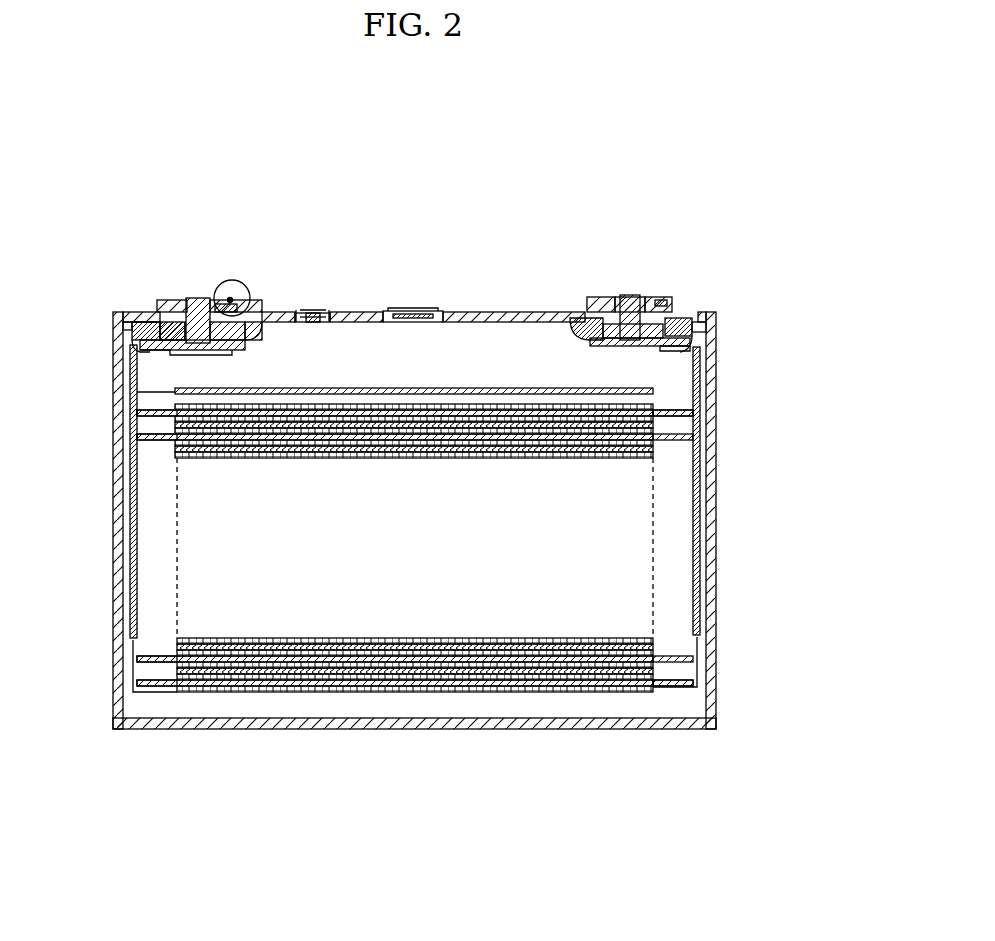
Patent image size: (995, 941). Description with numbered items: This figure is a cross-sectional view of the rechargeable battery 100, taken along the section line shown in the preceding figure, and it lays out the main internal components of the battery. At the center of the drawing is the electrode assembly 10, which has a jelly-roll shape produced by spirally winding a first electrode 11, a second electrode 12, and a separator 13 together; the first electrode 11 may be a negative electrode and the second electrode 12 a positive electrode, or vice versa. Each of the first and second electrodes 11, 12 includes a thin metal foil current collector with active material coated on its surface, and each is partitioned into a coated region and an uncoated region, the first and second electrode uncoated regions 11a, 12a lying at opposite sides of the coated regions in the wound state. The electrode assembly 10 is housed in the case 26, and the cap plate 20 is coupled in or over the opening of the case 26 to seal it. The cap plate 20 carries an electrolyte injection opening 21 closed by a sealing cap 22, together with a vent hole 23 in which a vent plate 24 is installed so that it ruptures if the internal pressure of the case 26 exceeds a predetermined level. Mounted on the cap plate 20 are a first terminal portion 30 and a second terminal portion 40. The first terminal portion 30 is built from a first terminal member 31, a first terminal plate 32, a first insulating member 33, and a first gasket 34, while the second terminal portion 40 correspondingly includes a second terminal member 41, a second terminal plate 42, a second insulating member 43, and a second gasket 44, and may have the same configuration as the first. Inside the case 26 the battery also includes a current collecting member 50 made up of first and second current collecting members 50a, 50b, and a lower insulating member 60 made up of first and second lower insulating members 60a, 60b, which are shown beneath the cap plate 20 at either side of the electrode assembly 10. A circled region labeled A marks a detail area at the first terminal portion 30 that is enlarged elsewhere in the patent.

The rechargeable battery 100 is at (396, 171).
The electrode assembly 10 is at (415, 589).
The first electrode 11 is at (600, 665).
The first electrode uncoated region 11a is at (670, 690).
The second electrode 12 is at (225, 665).
The second electrode uncoated region 12a is at (160, 690).
The separator 13 is at (418, 667).
The cap plate 20 is at (497, 311).
The electrolyte injection opening 21 is at (312, 323).
The sealing cap 22 is at (312, 311).
The vent hole 23 is at (410, 323).
The vent plate 24 is at (410, 311).
The case 26 is at (716, 590).
The first terminal portion 30 is at (214, 280).
The first terminal member 31 is at (196, 299).
The first terminal plate 32 is at (228, 301).
The first insulating member 33 is at (258, 306).
The first gasket 34 is at (168, 300).
The second terminal portion 40 is at (635, 280).
The second terminal member 41 is at (622, 297).
The second terminal plate 42 is at (657, 298).
The second insulating member 43 is at (675, 306).
The second gasket 44 is at (593, 298).
The current collecting member 50 is at (222, 826).
The first current collecting member 50a is at (128, 432).
The second current collecting member 50b is at (702, 468).
The lower insulating member 60 is at (105, 828).
The first lower insulating member 60a is at (132, 338).
The second lower insulating member 60b is at (702, 331).
The detail region A is at (251, 300).